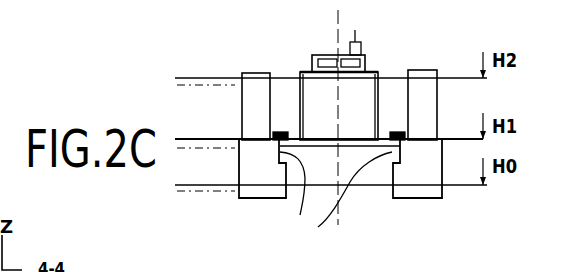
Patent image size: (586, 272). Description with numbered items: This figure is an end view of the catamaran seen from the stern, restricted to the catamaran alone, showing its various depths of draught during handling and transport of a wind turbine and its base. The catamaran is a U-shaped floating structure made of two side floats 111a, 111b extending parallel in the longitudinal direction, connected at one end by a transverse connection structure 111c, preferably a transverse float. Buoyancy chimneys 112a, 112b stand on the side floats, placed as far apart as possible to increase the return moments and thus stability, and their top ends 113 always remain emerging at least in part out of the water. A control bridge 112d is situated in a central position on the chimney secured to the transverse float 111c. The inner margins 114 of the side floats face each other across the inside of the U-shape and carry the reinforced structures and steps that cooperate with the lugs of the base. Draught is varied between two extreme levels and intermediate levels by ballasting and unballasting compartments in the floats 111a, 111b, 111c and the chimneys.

The side float 111a is at (255, 172).
The side float 111b is at (430, 163).
The transverse connection structure 111c is at (374, 172).
The buoyancy chimney 112a is at (253, 115).
The buoyancy chimney 112b is at (425, 98).
The control bridge 112d is at (366, 88).
The top end of chimney 113 is at (323, 54).
The inner margin of side float 114 is at (296, 197).